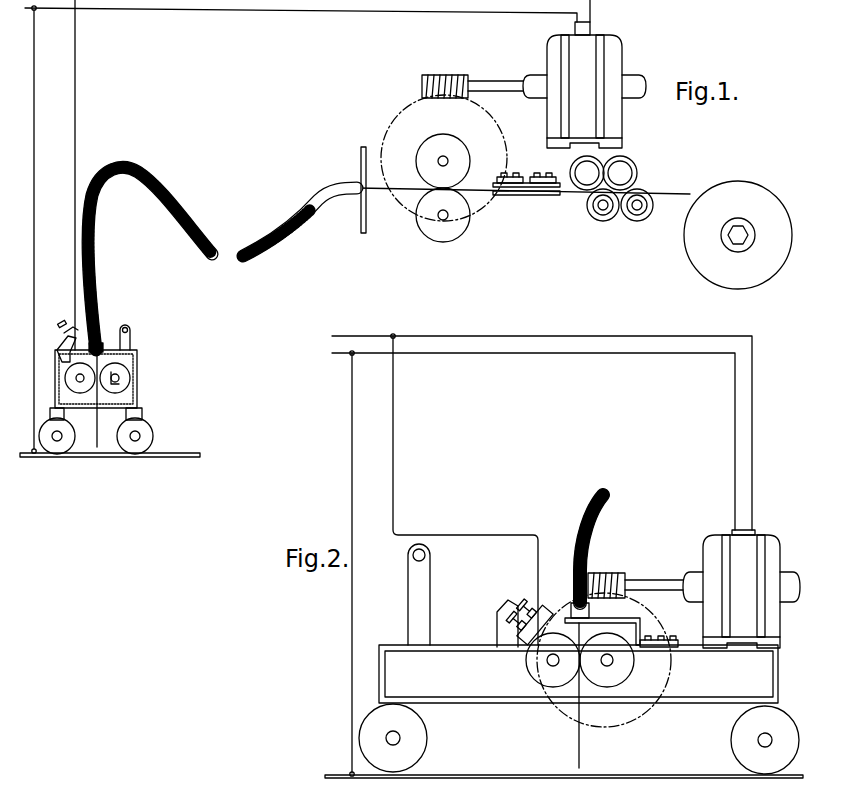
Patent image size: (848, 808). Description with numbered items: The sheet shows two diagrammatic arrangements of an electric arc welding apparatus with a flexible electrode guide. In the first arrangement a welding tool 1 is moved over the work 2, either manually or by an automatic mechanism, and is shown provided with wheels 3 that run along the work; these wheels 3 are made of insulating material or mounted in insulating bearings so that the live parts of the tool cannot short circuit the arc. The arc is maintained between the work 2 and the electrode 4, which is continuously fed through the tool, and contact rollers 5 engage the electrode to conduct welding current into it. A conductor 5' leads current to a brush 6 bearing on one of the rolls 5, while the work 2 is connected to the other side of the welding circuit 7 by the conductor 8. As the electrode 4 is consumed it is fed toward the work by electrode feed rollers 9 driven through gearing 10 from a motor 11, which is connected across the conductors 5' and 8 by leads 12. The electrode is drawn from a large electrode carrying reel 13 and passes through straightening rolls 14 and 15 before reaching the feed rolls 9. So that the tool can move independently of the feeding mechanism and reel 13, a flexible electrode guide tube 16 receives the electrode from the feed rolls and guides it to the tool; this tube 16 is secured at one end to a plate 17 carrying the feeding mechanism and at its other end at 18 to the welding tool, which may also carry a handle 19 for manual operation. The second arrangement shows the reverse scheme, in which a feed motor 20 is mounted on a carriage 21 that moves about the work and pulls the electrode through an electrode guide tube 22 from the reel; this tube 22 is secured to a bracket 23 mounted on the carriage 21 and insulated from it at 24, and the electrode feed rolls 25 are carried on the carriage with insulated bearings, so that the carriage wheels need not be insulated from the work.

In FIG. 1, the welding tool 1 is at (140, 362).
In FIG. 1, the work 2 is at (172, 455).
In FIG. 1, the wheels 3 is at (147, 428).
In FIG. 1, the electrode 4 is at (94, 436).
In FIG. 1, the contact rollers 5 is at (112, 378).
In FIG. 1, the conductor 5' is at (94, 175).
In FIG. 1, the brush 6 is at (60, 358).
In FIG. 1, the welding circuit 7 is at (184, 2).
In FIG. 1, the conductor 8 is at (36, 56).
In FIG. 1, the electrode feed rollers 9 is at (428, 175).
In FIG. 1, the gearing 10 is at (425, 94).
In FIG. 1, the motor 11 is at (546, 50).
In FIG. 1, the leads 12 is at (592, 30).
In FIG. 1, the electrode carrying reel 13 is at (685, 222).
In FIG. 1, the straightening rolls 14 is at (590, 196).
In FIG. 1, the straightening rolls 15 is at (525, 196).
In FIG. 1, the flexible electrode guide tube 16 is at (257, 262).
In FIG. 1, the plate 17 is at (360, 165).
In FIG. 1, the securing point 18 is at (108, 345).
In FIG. 1, the handle 19 is at (132, 329).
In FIG. 2, the feed motor 20 is at (712, 552).
In FIG. 2, the carriage 21 is at (694, 702).
In FIG. 2, the electrode guide tube 22 is at (592, 555).
In FIG. 2, the bracket 23 is at (648, 626).
In FIG. 2, the insulation 24 is at (665, 650).
In FIG. 2, the electrode feed rolls 25 is at (596, 680).